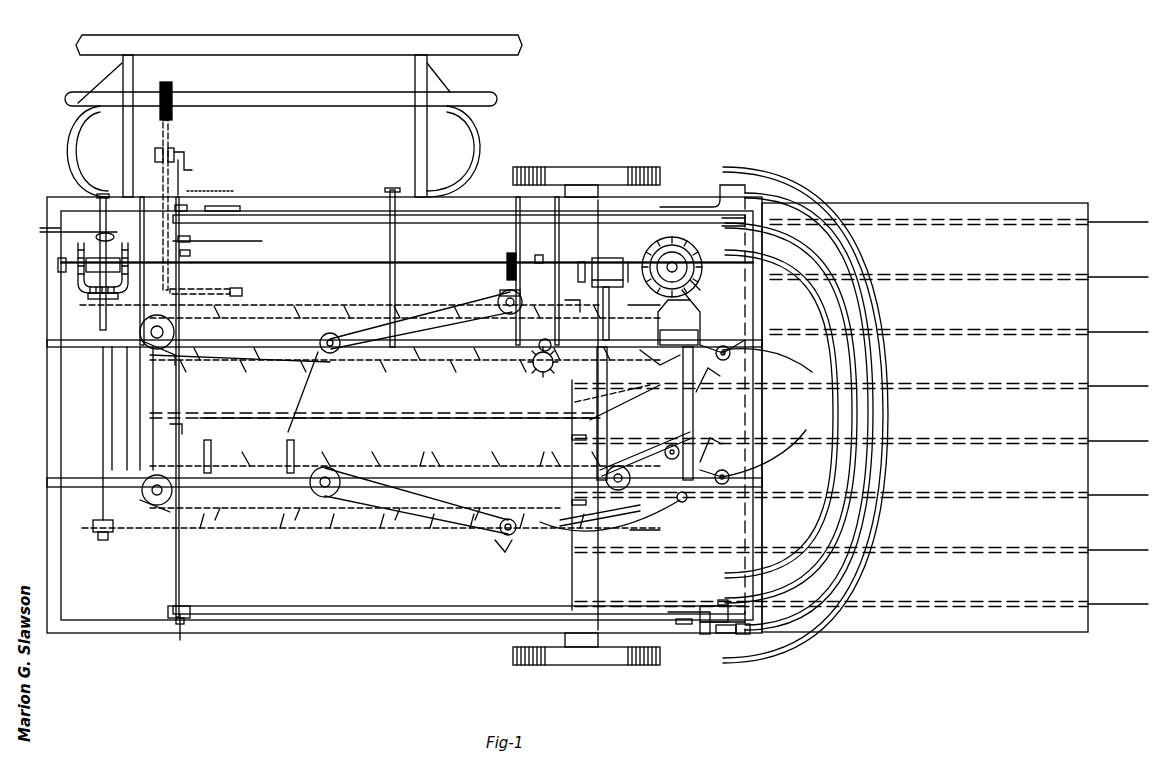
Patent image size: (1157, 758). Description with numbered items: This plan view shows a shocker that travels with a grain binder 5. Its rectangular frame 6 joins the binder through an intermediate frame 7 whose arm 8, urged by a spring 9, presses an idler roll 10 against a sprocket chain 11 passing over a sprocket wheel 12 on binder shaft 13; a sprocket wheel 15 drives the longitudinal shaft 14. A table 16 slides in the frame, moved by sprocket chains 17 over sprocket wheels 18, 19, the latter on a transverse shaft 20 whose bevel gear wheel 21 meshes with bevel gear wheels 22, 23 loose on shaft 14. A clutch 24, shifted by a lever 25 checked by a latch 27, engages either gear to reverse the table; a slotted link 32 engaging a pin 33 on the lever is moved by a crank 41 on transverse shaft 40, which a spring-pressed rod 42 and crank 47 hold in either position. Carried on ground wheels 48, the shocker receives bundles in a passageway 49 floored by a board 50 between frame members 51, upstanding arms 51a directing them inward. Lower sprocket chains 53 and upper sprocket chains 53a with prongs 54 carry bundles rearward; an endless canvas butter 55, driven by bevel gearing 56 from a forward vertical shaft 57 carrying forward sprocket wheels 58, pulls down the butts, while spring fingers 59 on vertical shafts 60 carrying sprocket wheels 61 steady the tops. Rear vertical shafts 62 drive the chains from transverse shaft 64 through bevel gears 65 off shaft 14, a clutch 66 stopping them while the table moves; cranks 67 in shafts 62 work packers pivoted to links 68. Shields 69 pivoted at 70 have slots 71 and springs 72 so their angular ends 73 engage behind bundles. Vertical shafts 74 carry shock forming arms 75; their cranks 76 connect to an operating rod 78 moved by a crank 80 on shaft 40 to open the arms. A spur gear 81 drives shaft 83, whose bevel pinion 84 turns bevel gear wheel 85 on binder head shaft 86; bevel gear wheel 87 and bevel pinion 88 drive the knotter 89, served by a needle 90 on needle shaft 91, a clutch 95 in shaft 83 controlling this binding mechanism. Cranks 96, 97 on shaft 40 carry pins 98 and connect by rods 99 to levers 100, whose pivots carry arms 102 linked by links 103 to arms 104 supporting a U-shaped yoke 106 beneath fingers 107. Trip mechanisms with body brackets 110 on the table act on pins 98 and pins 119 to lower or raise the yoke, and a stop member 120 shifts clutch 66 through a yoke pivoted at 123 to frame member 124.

The supporting board 5 is at (434, 35).
The frame side bar 6 is at (480, 200).
The main frame 7 is at (356, 197).
The bracket arm 8 is at (186, 155).
The spring 9 is at (186, 178).
The guide clip 10 is at (176, 150).
The rack rod 11 is at (169, 132).
The handle head 12 is at (174, 86).
The transverse bar 13 is at (278, 100).
The frame post 14 is at (358, 275).
The clamp 15 is at (190, 253).
The box 16 is at (925, 417).
The toothed chain 17 is at (355, 302).
The bar 18 is at (660, 305).
The shaft support 19 is at (96, 300).
The vertical pipe 20 is at (110, 412).
The gear hub 21 is at (90, 289).
The knob 22 is at (58, 262).
The collar 23 is at (112, 236).
The bevel gear 24 is at (80, 270).
The vertical shaft 25 is at (100, 219).
The lever end 27 is at (46, 228).
The clamp block 32 is at (190, 239).
The lever 33 is at (70, 235).
The post 40 is at (179, 553).
The rod 41 is at (217, 241).
The block 42 is at (246, 288).
The spring rod 47 is at (200, 288).
The wheel 48 is at (602, 168).
The conveyor 49 is at (430, 362).
The guide line 50 is at (400, 404).
The conveyor teeth 51 is at (496, 362).
The pin 51a is at (212, 448).
The chain 53 is at (280, 362).
The chain link 53a is at (355, 362).
The conveyor chain 54 is at (436, 300).
The pipe 55 is at (112, 385).
The chain 56 is at (176, 494).
The sprocket 57 is at (176, 331).
The sprocket guard 58 is at (178, 358).
The rod 59 is at (300, 444).
The sprocket 60 is at (342, 340).
The belt 61 is at (326, 345).
The bracket 62 is at (660, 336).
The rod 64 is at (600, 398).
The gear box 65 is at (625, 262).
The disc 66 is at (581, 262).
The link 67 is at (600, 519).
The star sprocket 68 is at (544, 374).
The connecting rod 69 is at (662, 444).
The pulley 70 is at (540, 352).
The link 71 is at (630, 405).
The pulley 72 is at (726, 360).
The lever 73 is at (700, 394).
The arm 74 is at (718, 342).
The tube 75 is at (798, 360).
The pulley 76 is at (680, 455).
The block 78 is at (558, 438).
The bracket 80 is at (184, 428).
The hub 81 is at (506, 255).
The shaft 83 is at (625, 311).
The gear teeth 84 is at (670, 236).
The gear 85 is at (690, 252).
The gear hub 86 is at (688, 266).
The pawl 87 is at (700, 290).
The pawl 88 is at (690, 300).
The bracket 89 is at (686, 322).
The cable 90 is at (658, 512).
The pulley 91 is at (686, 502).
The block 95 is at (539, 255).
The bracket 96 is at (188, 209).
The bracket 97 is at (188, 607).
The bolt 98 is at (212, 640).
The side bar 99 is at (316, 223).
The fitting 100 is at (716, 606).
The fitting 102 is at (704, 634).
The fitting 103 is at (726, 634).
The fitting 104 is at (750, 632).
The tube 106 is at (762, 525).
The tine 107 is at (1128, 606).
The tube end 110 is at (674, 634).
The bracket 119 is at (700, 205).
The pin 120 is at (628, 264).
The bracket 123 is at (574, 298).
The pulley 124 is at (527, 285).